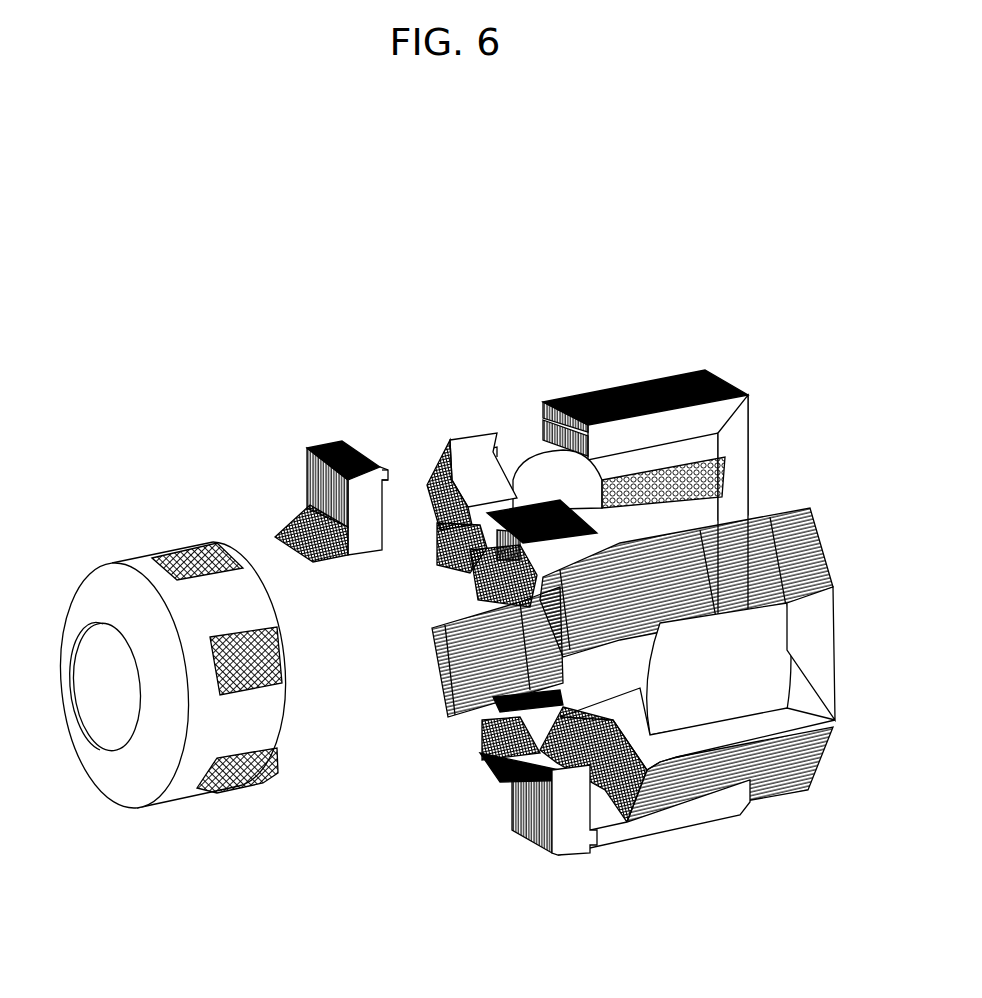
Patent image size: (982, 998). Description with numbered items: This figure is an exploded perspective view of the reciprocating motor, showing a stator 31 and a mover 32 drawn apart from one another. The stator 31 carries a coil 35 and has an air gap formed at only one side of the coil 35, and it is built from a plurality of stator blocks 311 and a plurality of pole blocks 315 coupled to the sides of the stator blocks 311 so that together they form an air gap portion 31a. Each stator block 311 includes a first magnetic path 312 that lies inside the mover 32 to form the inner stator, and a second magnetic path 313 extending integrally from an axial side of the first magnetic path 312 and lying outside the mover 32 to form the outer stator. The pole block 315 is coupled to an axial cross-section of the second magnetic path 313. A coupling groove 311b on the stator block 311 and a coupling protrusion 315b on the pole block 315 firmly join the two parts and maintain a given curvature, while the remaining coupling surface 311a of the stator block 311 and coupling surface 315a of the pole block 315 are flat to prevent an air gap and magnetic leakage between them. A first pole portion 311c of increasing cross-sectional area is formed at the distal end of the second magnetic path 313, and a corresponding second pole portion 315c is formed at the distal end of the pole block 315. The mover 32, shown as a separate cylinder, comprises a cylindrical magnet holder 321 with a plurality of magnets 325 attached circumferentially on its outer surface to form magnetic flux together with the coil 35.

The stator 31 is at (612, 556).
The air gap portion 31a is at (443, 553).
The stator block 311 is at (612, 456).
The coupling surface of the stator block 311a is at (557, 432).
The coupling groove 311b is at (552, 413).
The first pole portion 311c is at (497, 457).
The first magnetic path 312 is at (748, 445).
The second magnetic path 313 is at (668, 377).
The pole block 315 is at (357, 504).
The coupling surface of the pole block 315a is at (388, 477).
The coupling protrusion 315b is at (392, 478).
The second pole portion 315c is at (342, 558).
The mover 32 is at (167, 618).
The magnet holder 321 is at (137, 570).
The magnet 325 is at (193, 560).
The coil 35 is at (727, 477).